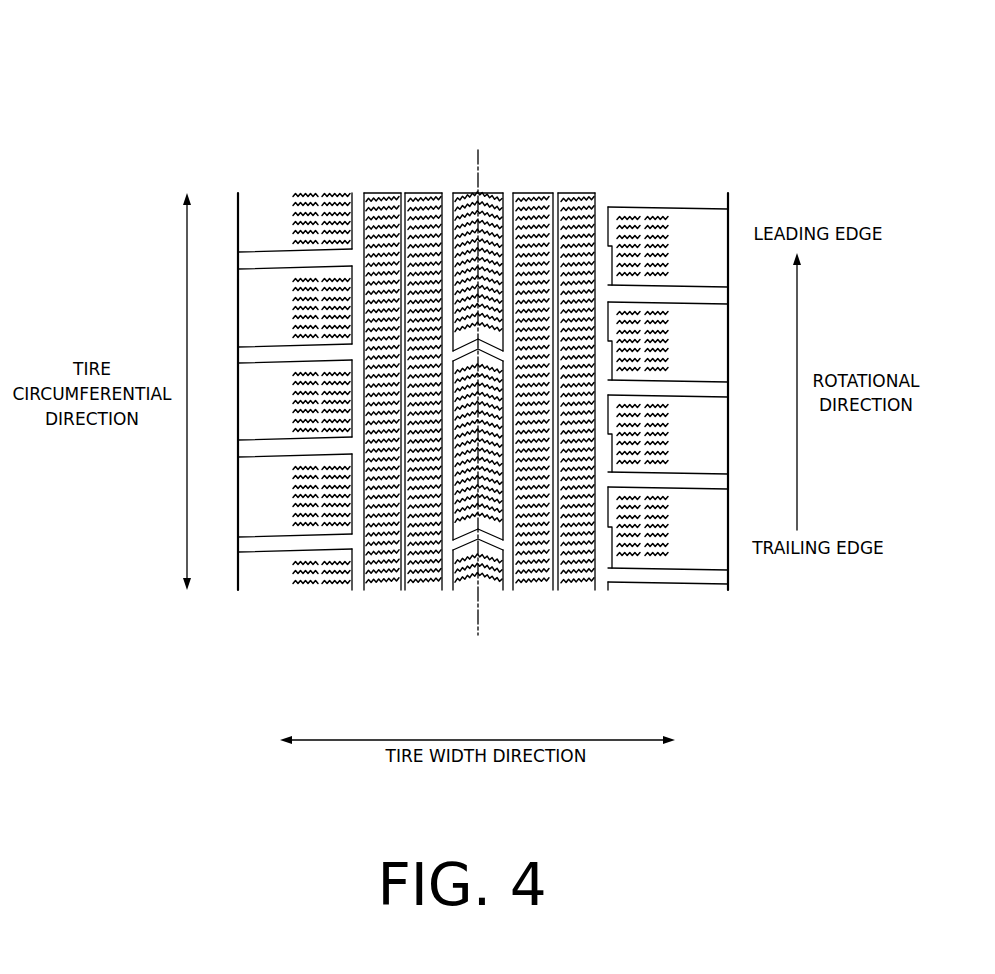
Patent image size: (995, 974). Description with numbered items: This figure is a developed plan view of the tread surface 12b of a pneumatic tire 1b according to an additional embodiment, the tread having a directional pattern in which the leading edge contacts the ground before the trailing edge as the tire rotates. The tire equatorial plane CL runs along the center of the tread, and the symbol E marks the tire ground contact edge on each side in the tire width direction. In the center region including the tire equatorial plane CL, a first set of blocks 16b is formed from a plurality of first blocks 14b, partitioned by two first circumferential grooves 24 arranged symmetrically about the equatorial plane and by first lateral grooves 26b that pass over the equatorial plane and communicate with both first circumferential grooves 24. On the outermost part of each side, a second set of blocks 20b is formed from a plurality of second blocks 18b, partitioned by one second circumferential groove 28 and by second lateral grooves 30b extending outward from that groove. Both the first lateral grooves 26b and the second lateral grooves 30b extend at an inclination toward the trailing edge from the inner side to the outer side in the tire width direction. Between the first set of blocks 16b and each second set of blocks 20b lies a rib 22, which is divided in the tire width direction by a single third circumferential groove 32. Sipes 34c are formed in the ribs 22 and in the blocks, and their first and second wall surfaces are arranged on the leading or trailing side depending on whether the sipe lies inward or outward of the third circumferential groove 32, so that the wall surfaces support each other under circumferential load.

The pneumatic tire 1b is at (322, 68).
The tread surface 12b is at (370, 116).
The first block 14b is at (447, 195).
The first set of blocks 16b is at (460, 116).
The second block 18b is at (232, 225).
The second set of blocks 20b is at (296, 168).
The rib 22 is at (406, 156).
The first circumferential groove 24 is at (451, 588).
The first lateral groove 26b is at (473, 196).
The second circumferential groove 28 is at (360, 588).
The second lateral groove 30b is at (262, 357).
The third circumferential groove 32 is at (403, 588).
The sipe 34c is at (483, 197).
The tire ground contact edge E is at (236, 197).
The tire equatorial plane CL is at (478, 380).